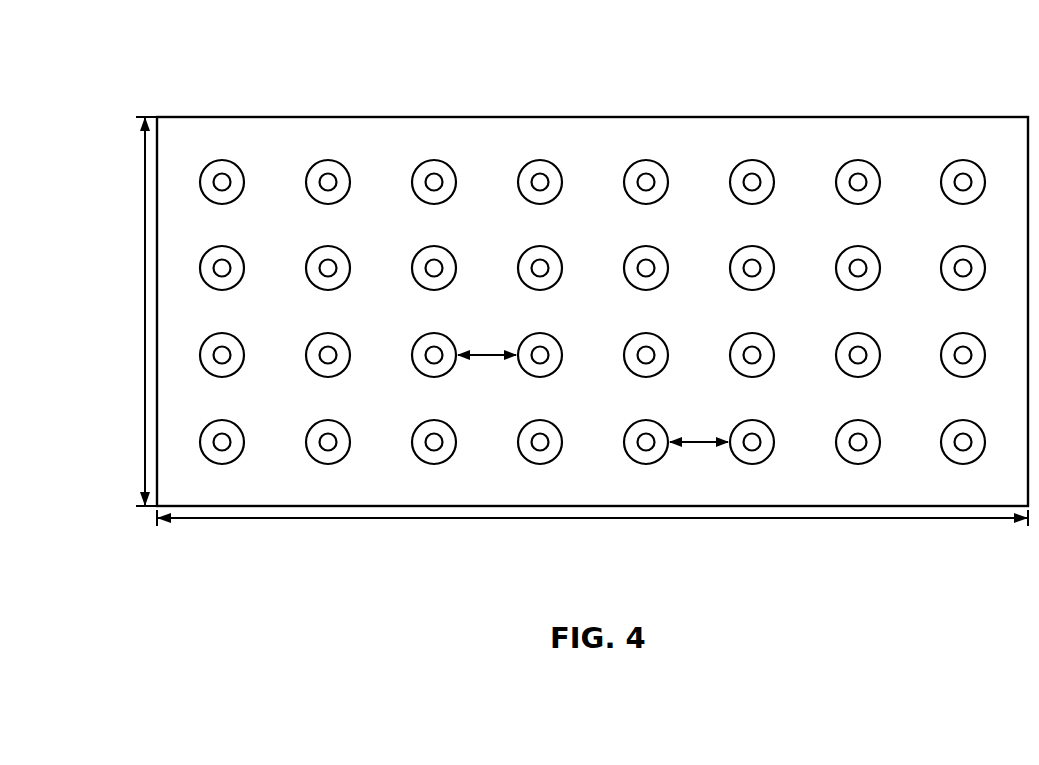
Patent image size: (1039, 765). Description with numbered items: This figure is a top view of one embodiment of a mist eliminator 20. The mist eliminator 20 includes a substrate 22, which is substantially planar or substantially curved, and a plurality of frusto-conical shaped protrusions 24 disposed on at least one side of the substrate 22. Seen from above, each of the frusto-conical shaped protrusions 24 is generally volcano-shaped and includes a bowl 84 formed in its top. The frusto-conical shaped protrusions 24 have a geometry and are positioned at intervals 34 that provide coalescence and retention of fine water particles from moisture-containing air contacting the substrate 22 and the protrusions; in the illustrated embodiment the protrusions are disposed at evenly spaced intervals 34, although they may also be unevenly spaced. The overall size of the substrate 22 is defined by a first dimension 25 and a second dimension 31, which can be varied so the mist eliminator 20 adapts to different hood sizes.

The mist eliminator 20 is at (952, 66).
The substrate 22 is at (713, 155).
The frusto-conical shaped protrusions 24 is at (332, 161).
The first dimension 25 is at (145, 311).
The second dimension 31 is at (592, 519).
The intervals 34 is at (488, 352).
The bowl 84 is at (434, 182).